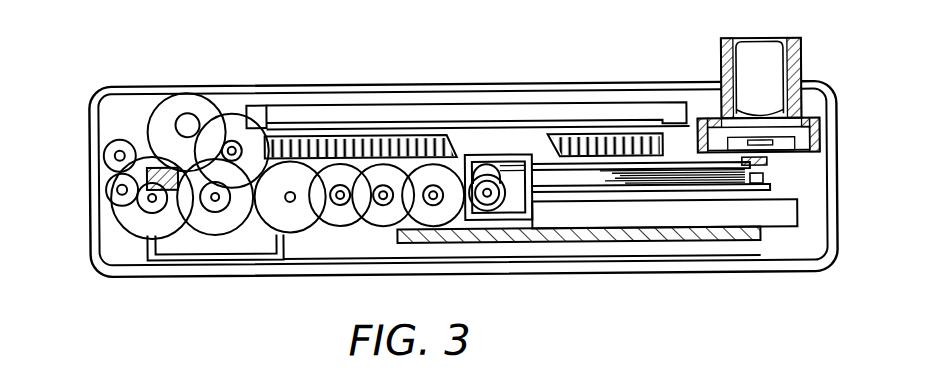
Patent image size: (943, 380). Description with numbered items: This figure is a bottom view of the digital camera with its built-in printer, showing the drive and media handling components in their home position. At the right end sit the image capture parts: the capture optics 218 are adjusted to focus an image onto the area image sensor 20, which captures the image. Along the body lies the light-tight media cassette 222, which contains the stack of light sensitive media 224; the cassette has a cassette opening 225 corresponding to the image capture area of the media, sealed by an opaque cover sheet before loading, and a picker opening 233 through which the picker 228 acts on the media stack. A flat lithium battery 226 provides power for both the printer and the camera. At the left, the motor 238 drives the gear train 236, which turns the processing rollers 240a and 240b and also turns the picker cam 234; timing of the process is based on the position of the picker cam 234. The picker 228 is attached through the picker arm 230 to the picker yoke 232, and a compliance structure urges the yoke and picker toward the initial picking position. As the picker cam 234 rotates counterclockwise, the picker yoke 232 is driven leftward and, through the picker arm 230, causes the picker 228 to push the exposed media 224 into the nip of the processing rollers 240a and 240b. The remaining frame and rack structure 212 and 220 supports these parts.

The area image sensor 20 is at (787, 148).
The frame rail 212 is at (540, 112).
The capture optics 218 is at (773, 76).
The rack 220 is at (337, 146).
The media cassette 222 is at (640, 214).
The light sensitive media 224 is at (707, 190).
The cassette opening 225 is at (620, 168).
The flat lithium battery 226 is at (705, 242).
The picker 228 is at (770, 168).
The picker arm 230 is at (565, 201).
The picker yoke 232 is at (478, 163).
The picker opening 233 is at (768, 182).
The picker cam 234 is at (490, 167).
The gear train 236 is at (305, 238).
The motor 238 is at (173, 100).
The processing roller 240a is at (112, 149).
The processing roller 240b is at (112, 184).